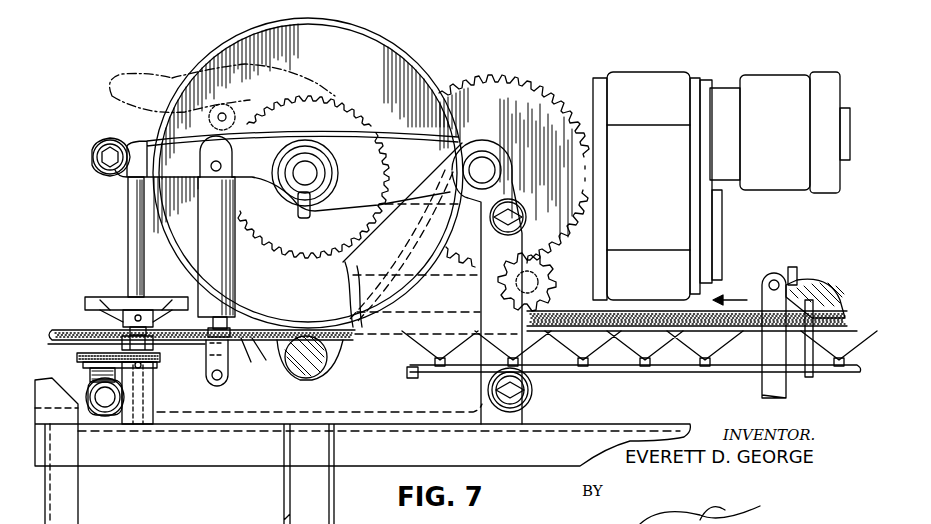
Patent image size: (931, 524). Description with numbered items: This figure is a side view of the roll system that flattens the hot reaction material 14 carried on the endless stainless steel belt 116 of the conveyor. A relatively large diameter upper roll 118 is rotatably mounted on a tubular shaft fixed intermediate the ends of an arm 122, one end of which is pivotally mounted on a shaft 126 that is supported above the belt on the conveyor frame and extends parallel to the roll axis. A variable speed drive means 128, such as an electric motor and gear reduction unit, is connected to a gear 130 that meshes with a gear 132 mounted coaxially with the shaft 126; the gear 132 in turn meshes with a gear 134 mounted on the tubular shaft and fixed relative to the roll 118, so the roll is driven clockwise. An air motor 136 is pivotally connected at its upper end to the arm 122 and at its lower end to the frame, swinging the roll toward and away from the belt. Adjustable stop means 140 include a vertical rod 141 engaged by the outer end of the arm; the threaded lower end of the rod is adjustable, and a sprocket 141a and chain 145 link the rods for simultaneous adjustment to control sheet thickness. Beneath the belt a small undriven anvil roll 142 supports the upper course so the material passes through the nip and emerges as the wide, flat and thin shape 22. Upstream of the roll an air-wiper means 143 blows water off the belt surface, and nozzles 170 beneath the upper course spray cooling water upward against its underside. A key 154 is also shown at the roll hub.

The material 14 is at (635, 316).
The wide, flat and thin shape 22 is at (84, 333).
The endless stainless steel belt 116 is at (241, 352).
The upper roll 118 is at (387, 42).
The arm 122 is at (137, 140).
The shaft 126 is at (457, 150).
The variable speed drive means 128 is at (710, 82).
The gear 130 is at (543, 277).
The gear 132 is at (520, 78).
The gear 134 is at (351, 97).
The air motor 136 is at (234, 283).
The adjustable stop means 140 is at (126, 294).
The vertical rod 141 is at (135, 222).
The sprocket 141a is at (157, 366).
The anvil roll 142 is at (318, 378).
The air-wiper means 143 is at (811, 279).
The chain 145 is at (77, 357).
The key 154 is at (336, 199).
The nozzles 170 is at (442, 373).